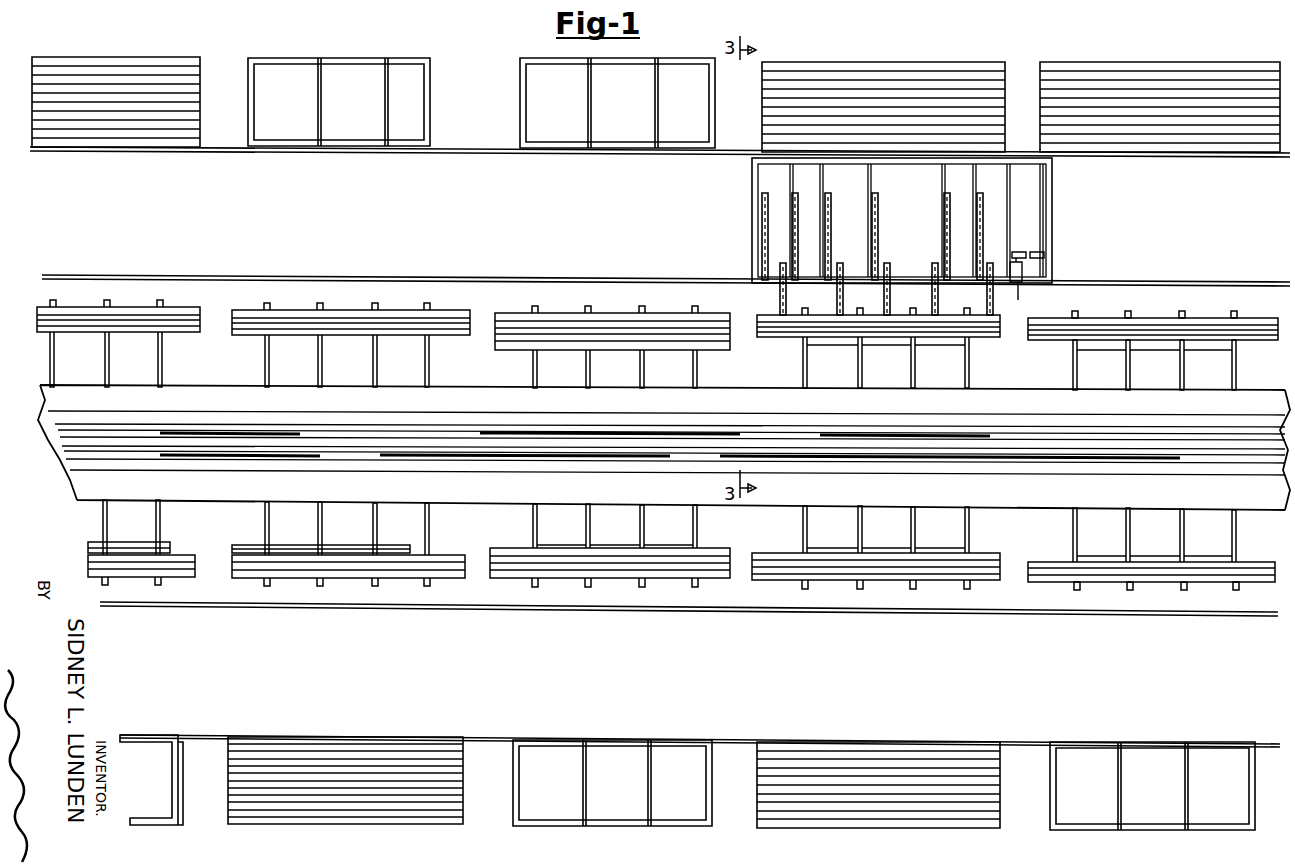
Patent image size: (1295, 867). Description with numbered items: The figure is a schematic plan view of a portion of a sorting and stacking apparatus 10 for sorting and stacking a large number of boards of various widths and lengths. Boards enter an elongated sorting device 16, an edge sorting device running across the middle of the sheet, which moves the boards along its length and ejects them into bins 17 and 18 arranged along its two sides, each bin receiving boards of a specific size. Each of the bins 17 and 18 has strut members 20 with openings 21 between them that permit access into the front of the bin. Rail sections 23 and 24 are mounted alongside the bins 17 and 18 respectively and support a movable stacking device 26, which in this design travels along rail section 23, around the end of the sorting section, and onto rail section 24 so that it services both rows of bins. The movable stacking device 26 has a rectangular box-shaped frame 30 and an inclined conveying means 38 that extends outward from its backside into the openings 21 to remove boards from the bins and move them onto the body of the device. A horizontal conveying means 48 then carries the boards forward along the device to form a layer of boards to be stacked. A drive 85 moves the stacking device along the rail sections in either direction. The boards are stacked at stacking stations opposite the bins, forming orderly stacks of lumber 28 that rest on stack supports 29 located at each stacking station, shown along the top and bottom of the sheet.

The sorting and stacking apparatus 10 is at (636, 238).
The elongated sorting device 16 is at (1115, 432).
The bin 17 is at (432, 543).
The bin 18 is at (657, 454).
The strut member 20 is at (1235, 315).
The opening 21 is at (1160, 299).
The rail section 23 is at (440, 614).
The rail section 24 is at (490, 150).
The movable stacking device 26 is at (932, 239).
The stack of lumber 28 is at (917, 77).
The stack support 29 is at (320, 118).
The rectangular box-shaped frame 30 is at (1050, 193).
The inclined conveying means 38 is at (942, 292).
The horizontal conveying means 48 is at (835, 233).
The drive 85 is at (1026, 286).